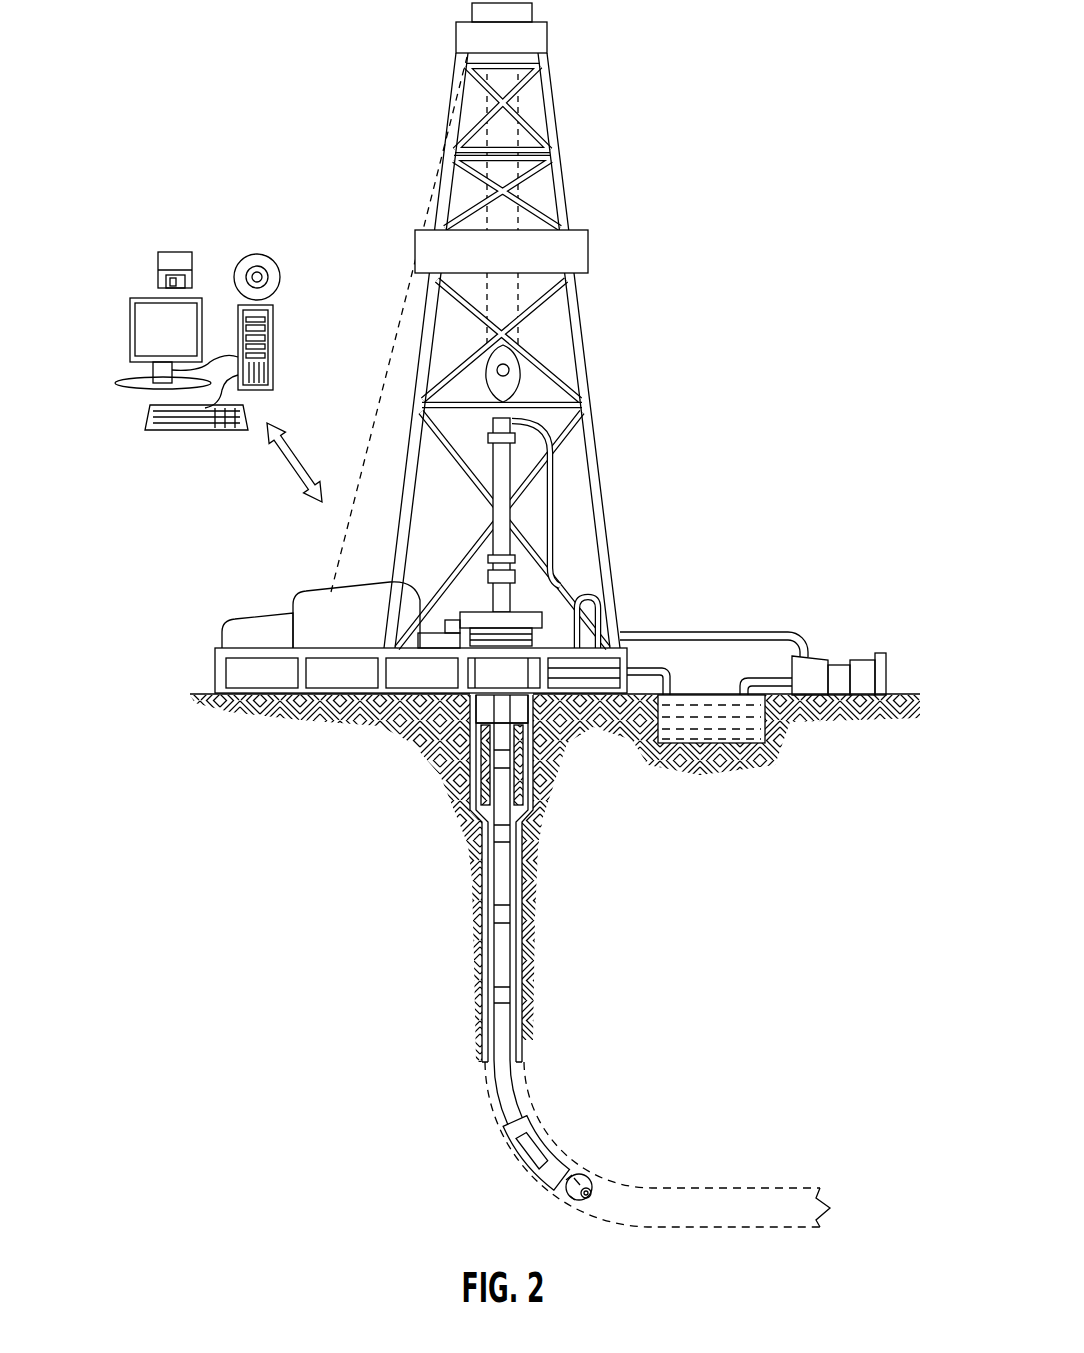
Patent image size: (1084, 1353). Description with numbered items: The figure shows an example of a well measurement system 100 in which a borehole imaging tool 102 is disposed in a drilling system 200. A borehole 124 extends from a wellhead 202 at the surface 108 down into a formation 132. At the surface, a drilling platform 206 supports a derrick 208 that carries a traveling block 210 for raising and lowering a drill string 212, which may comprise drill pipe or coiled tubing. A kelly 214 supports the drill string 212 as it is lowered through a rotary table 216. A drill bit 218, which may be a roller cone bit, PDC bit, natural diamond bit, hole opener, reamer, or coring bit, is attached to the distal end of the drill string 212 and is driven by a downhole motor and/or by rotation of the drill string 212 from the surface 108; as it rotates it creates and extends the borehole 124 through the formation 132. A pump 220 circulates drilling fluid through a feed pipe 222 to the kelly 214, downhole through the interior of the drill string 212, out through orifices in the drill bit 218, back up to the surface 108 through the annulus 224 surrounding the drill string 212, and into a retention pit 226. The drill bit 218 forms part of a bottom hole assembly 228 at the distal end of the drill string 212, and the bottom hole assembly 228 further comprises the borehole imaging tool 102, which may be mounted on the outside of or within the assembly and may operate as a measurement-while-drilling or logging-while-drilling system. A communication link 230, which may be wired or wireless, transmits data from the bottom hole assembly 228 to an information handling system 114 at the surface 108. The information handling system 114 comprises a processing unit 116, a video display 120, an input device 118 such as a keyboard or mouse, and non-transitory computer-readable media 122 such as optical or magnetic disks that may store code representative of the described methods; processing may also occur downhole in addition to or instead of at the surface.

The drilling system 100 is at (352, 110).
The borehole imaging tool 102 is at (537, 1140).
The surface 108 is at (910, 692).
The information handling system 114 is at (132, 208).
The processing unit 116 is at (273, 325).
The input device 118 is at (165, 430).
The video display 120 is at (130, 330).
The non-transitory computer-readable media 122 is at (175, 252).
The borehole 124 is at (536, 942).
The formation 132 is at (648, 934).
The drilling system 200 is at (805, 110).
The wellhead 202 is at (548, 637).
The drilling platform 206 is at (215, 672).
The derrick 208 is at (563, 181).
The traveling block 210 is at (527, 378).
The drill string 212 is at (510, 890).
The kelly 214 is at (512, 465).
The rotary table 216 is at (536, 612).
The drill bit 218 is at (586, 1172).
The pump 220 is at (820, 665).
The feed pipe 222 is at (768, 630).
The annulus 224 is at (480, 897).
The retention pit 226 is at (715, 750).
The bottom hole assembly 228 is at (502, 1143).
The communication link 230 is at (283, 468).